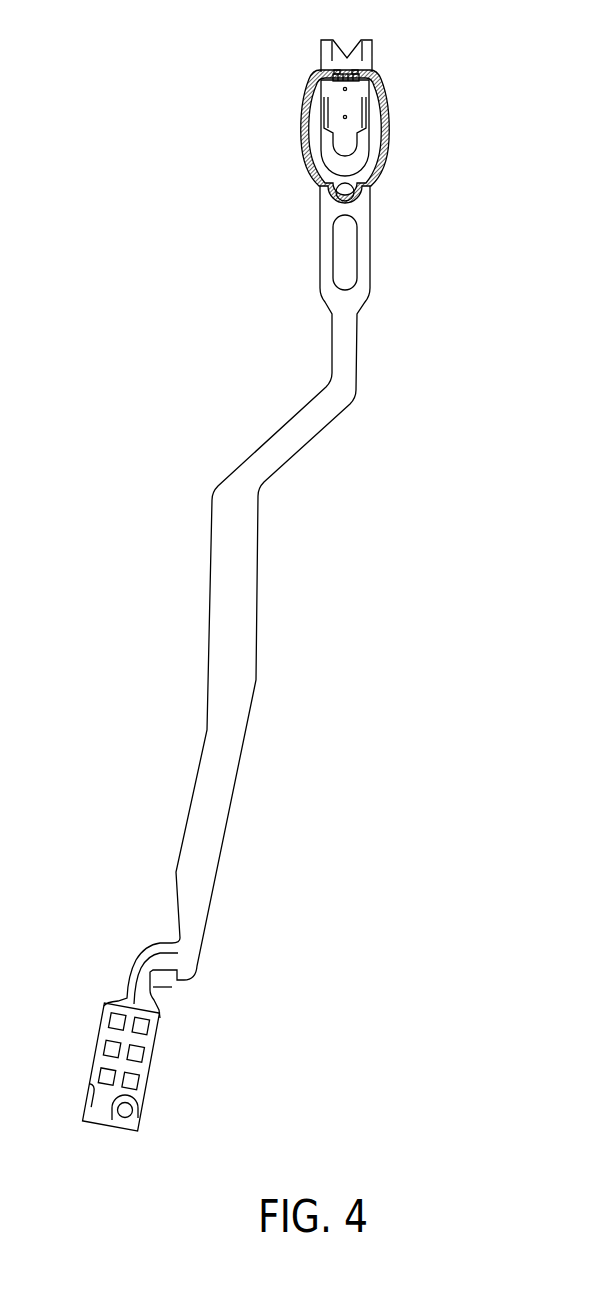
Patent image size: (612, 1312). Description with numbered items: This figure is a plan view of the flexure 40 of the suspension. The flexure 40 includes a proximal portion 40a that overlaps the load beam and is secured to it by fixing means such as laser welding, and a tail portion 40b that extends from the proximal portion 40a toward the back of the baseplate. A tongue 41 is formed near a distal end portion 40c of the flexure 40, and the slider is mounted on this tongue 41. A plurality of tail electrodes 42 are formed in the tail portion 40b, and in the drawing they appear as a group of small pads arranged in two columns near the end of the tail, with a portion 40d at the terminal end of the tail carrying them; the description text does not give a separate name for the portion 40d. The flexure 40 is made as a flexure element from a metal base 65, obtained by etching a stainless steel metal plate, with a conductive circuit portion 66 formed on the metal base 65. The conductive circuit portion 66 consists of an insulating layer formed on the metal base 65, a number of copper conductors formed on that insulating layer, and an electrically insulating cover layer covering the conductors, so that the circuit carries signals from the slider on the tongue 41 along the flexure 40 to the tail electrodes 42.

The flexure 40 is at (236, 593).
The proximal portion 40a is at (327, 212).
The tail portion 40b is at (218, 832).
The distal end portion 40c is at (367, 42).
The terminal end portion of flexible printed circuit 40d is at (127, 1094).
The tongue 41 is at (357, 107).
The tail electrodes 42 is at (107, 1077).
The metal base 65 is at (132, 1124).
The conductive circuit portion 66 is at (383, 147).